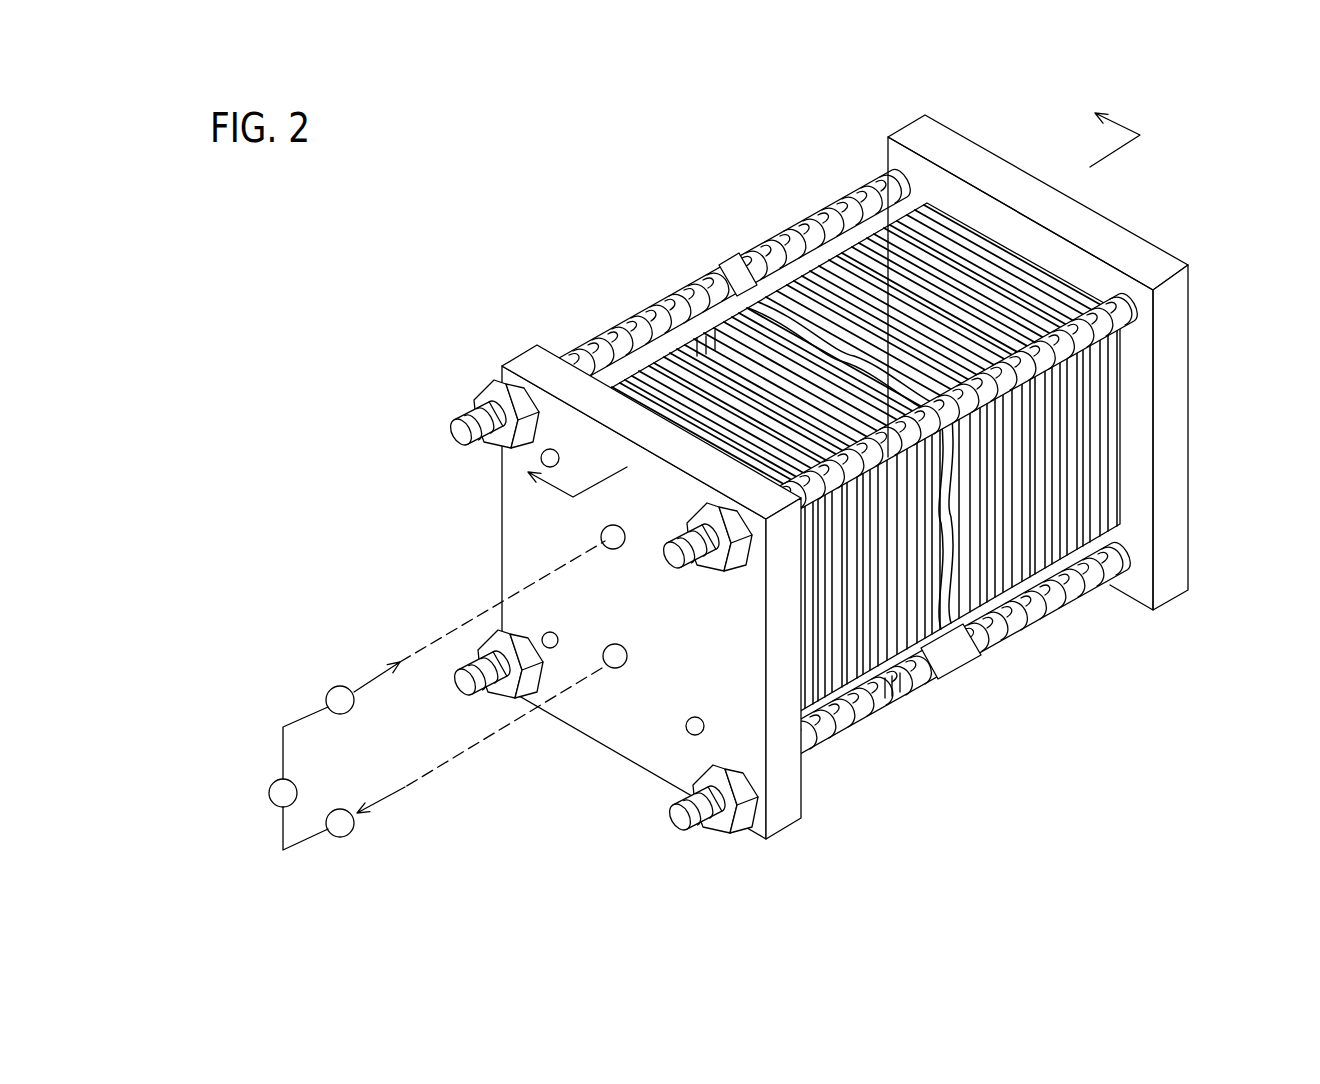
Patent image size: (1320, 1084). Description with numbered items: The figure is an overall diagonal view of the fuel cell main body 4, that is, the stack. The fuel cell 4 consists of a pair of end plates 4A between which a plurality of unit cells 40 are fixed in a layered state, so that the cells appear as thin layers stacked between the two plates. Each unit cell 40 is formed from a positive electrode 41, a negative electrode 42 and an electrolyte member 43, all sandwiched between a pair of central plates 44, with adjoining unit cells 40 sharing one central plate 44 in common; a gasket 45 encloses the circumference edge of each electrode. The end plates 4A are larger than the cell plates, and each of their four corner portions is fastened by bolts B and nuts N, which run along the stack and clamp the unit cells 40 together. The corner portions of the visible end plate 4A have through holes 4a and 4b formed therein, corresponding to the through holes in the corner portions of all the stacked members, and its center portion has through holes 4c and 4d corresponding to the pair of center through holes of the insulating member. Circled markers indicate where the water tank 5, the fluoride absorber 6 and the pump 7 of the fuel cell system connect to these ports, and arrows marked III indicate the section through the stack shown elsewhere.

The fuel cell main body 4 is at (779, 162).
The end plate 4A is at (990, 168).
The through hole 4a is at (540, 460).
The through hole 4b is at (705, 528).
The through hole 4c is at (603, 545).
The through hole 4d is at (605, 668).
The unit cell 40 is at (824, 490).
The electrolyte member 43 is at (682, 355).
The central plate 44 is at (741, 282).
The gasket 45 is at (803, 502).
The positive electrode 41 is at (668, 330).
The negative electrode 42 is at (697, 338).
The bolt B is at (857, 193).
The nut N is at (488, 375).
The water tank 5 is at (283, 793).
The fluoride absorber 6 is at (442, 759).
The pump 7 is at (444, 660).
The section line III is at (834, 313).